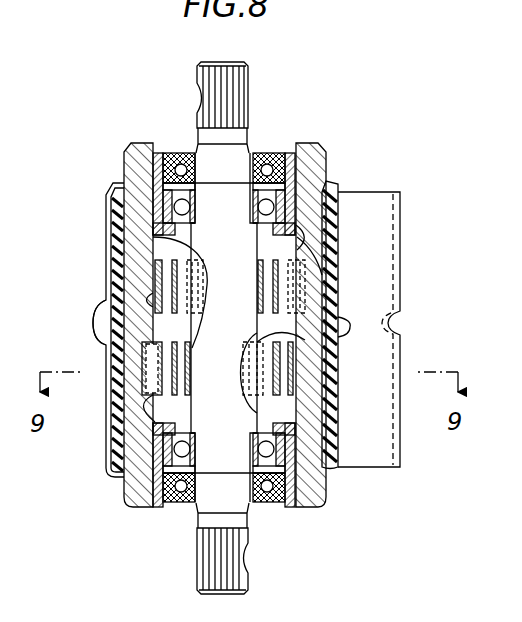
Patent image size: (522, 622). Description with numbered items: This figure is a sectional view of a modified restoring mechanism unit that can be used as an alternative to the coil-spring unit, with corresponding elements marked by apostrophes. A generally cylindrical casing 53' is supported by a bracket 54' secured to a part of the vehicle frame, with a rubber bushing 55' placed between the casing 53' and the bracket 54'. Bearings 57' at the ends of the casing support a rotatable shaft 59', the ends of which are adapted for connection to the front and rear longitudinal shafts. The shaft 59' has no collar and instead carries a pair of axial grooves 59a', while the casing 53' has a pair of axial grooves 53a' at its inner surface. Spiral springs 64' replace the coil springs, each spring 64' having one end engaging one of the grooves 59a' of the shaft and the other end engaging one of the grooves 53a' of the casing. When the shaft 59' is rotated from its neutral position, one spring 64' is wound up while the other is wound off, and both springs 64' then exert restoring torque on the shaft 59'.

The casing 53' is at (179, 325).
The axial grooves of the casing 53a' is at (237, 310).
The bracket 54' is at (392, 329).
The rubber bushing 55' is at (82, 330).
The bearing 57' is at (225, 327).
The rotatable shaft 59' is at (249, 328).
The axial grooves of the shaft 59a' is at (249, 308).
The spiral spring 64' is at (243, 293).